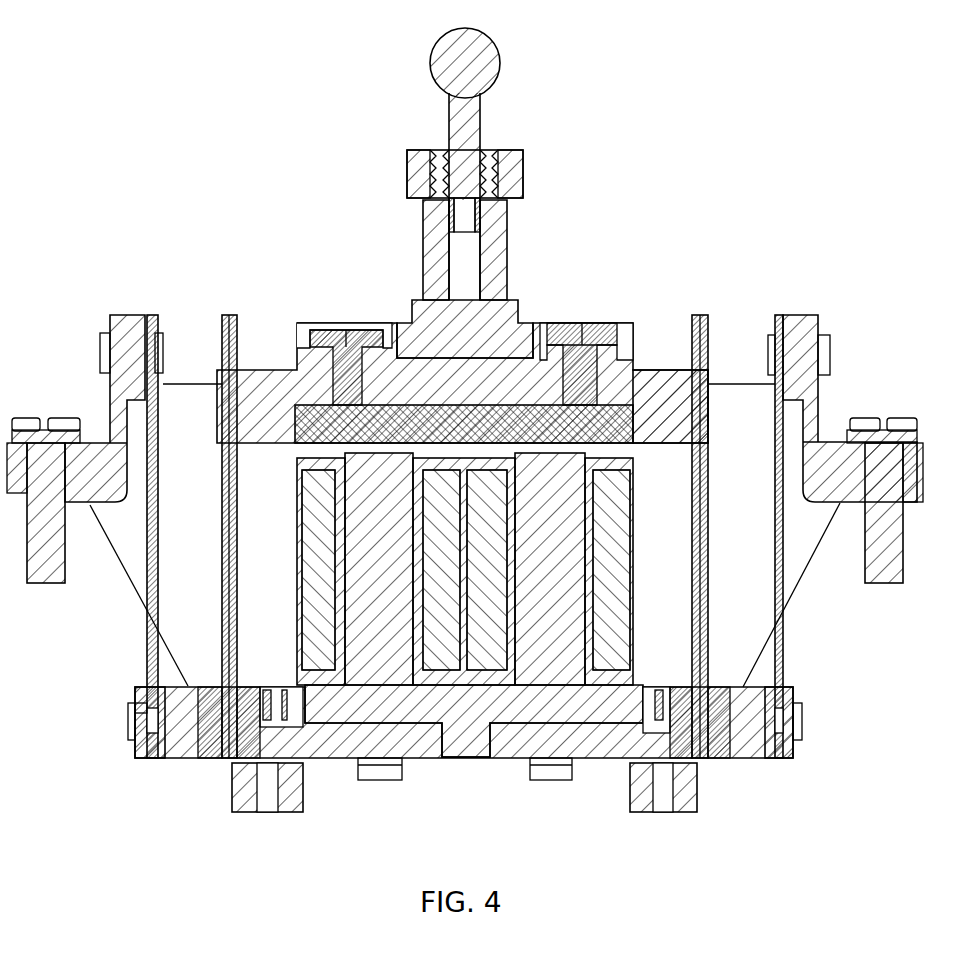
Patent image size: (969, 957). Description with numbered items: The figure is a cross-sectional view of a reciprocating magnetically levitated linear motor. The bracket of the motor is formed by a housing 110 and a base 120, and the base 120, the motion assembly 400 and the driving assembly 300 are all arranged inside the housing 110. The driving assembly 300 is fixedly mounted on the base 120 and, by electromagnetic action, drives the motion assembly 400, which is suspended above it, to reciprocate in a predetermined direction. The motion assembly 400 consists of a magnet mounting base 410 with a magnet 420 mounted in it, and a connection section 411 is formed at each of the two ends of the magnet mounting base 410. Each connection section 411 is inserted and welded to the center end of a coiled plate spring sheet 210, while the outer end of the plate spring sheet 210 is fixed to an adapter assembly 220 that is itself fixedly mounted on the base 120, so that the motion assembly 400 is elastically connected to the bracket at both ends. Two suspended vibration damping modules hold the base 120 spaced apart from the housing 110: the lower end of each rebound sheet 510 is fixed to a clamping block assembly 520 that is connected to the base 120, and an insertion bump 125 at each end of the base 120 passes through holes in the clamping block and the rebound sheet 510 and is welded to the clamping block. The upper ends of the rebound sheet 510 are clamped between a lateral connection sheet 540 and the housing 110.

The housing 110 is at (118, 313).
The base 120 is at (513, 743).
The insertion bump 125 is at (135, 706).
The plate spring sheet 210 is at (223, 333).
The adapter assembly 220 is at (200, 757).
The driving assembly 300 is at (405, 707).
The motion assembly 400 is at (484, 235).
The magnet mounting base 410 is at (396, 357).
The connection section 411 is at (722, 378).
The magnet 420 is at (277, 368).
The rebound sheet 510 is at (147, 628).
The clamping block assembly 520 is at (135, 740).
The lateral connection sheet 540 is at (777, 313).